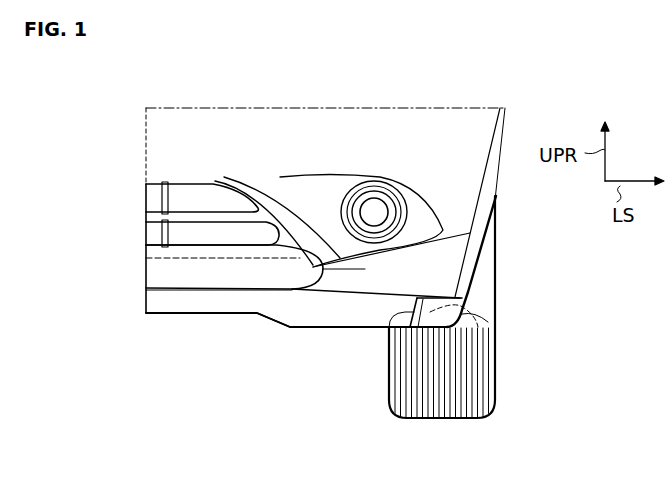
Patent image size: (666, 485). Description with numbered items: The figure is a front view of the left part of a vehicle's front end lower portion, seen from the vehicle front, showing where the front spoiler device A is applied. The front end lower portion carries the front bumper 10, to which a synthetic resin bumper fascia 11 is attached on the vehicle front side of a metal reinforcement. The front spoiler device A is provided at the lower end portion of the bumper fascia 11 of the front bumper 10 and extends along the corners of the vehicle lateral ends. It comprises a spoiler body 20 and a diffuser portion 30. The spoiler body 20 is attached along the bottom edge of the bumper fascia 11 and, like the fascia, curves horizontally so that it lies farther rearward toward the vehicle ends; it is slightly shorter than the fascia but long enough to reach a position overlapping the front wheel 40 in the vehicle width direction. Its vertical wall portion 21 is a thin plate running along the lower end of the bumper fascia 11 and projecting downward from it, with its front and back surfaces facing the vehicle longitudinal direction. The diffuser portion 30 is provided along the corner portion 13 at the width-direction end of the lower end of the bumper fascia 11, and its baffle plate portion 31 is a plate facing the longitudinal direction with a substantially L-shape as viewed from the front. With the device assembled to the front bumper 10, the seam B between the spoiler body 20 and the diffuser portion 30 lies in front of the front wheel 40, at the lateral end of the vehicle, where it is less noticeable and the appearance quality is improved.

The front bumper 10 is at (166, 141).
The bumper fascia 11 is at (285, 140).
The corner portion 13 is at (467, 270).
The spoiler body 20 is at (240, 318).
The vertical wall portion 21 is at (183, 300).
The diffuser portion 30 is at (489, 280).
The baffle plate portion 31 is at (480, 318).
The front wheel 40 is at (497, 375).
The front spoiler device A is at (295, 332).
The seam B is at (387, 322).